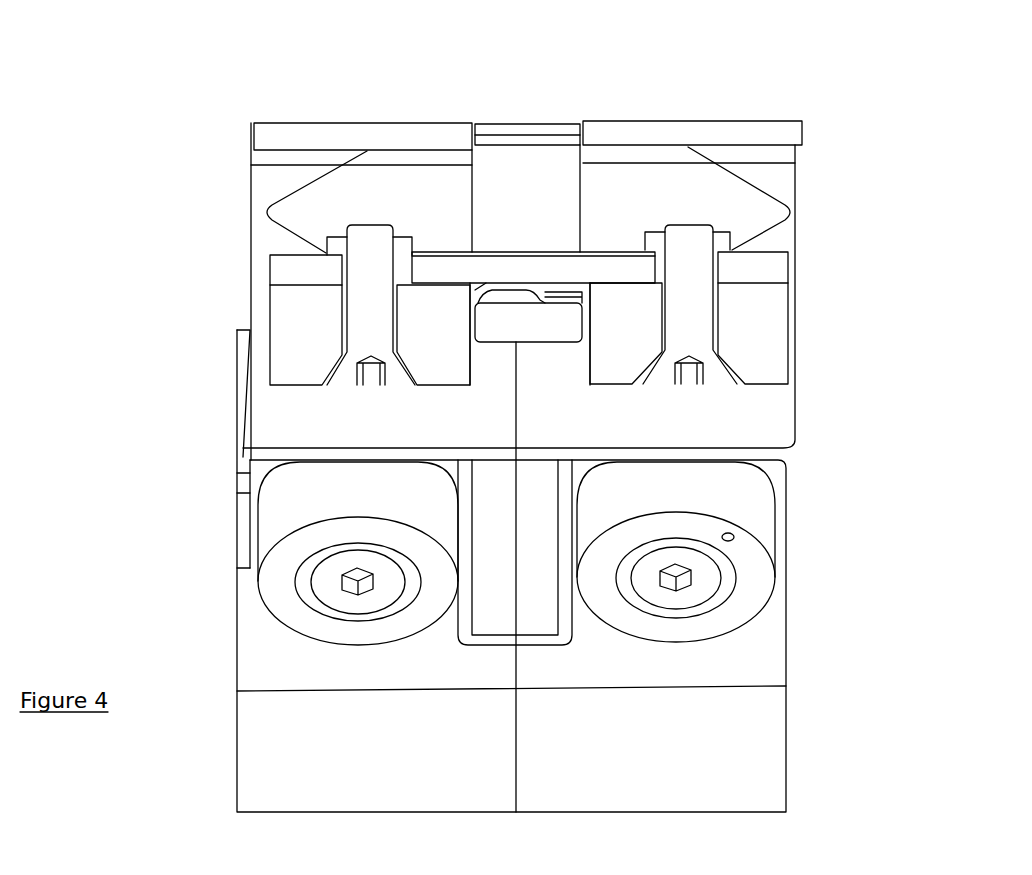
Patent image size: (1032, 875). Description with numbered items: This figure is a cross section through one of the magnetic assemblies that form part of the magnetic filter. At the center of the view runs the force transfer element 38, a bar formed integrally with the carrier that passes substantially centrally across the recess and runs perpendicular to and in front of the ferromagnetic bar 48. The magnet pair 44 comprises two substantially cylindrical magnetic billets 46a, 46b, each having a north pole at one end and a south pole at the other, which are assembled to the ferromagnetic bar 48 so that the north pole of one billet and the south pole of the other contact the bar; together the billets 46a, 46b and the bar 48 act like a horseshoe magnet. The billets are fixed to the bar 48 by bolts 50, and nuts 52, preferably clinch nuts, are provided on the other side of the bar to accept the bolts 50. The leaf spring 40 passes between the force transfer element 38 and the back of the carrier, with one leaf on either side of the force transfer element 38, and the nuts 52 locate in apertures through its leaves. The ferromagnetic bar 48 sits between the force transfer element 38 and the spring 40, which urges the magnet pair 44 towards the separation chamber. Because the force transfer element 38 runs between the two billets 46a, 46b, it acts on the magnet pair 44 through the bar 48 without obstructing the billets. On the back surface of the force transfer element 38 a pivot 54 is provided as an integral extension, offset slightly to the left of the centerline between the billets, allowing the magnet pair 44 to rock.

The force transfer element 38 is at (563, 318).
The leaf spring 40 is at (774, 184).
The magnet pair 44 is at (272, 250).
The magnetic billet 46a is at (291, 328).
The magnetic billet 46b is at (773, 337).
The ferromagnetic bar 48 is at (477, 266).
The bolt 50 is at (362, 347).
The nut 52 is at (323, 235).
The pivot 54 is at (516, 295).